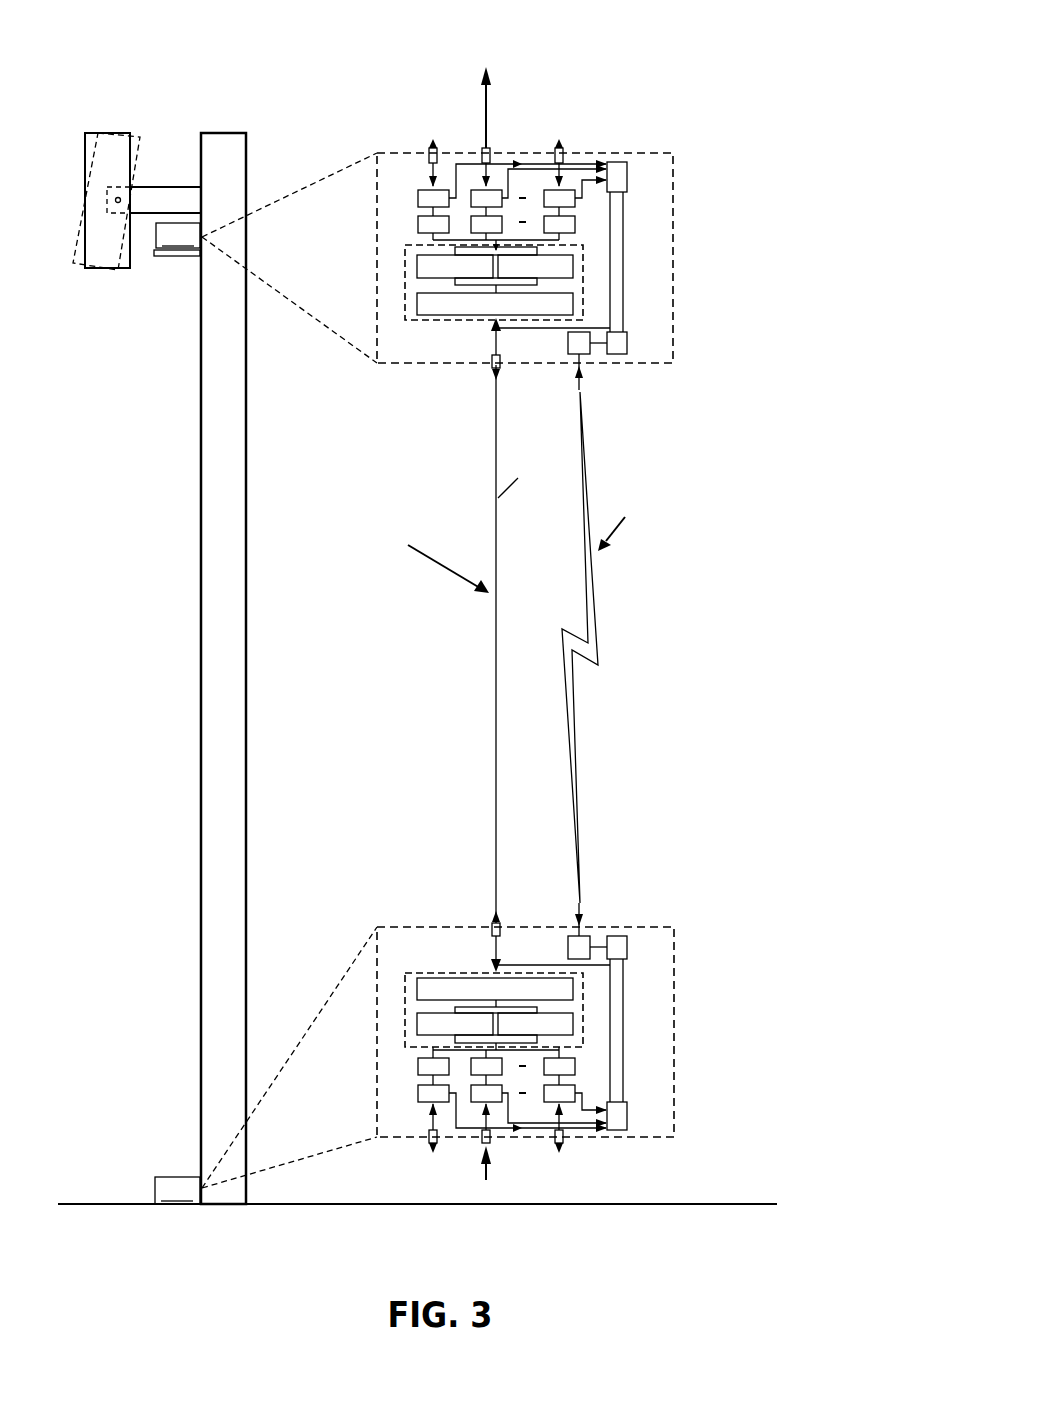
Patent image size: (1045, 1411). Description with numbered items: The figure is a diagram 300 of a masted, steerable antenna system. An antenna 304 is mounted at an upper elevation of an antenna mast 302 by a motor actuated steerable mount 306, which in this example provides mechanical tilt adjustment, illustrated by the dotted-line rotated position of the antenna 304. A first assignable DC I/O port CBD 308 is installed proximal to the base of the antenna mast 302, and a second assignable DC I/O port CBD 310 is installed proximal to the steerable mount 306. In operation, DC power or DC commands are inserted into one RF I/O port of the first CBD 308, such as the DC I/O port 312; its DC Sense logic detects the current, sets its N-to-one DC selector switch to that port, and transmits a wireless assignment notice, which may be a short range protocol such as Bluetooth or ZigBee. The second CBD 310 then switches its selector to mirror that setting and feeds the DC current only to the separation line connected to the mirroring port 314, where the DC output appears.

The diagram of masted, steerable antenna system 300 is at (729, 47).
The antenna mast 302 is at (247, 462).
The antenna 304 is at (127, 135).
The motor actuated steerable mount 306 is at (135, 187).
The first assignable DC I/O port CBD 308 is at (439, 1049).
The second assignable DC I/O port CBD 310 is at (443, 241).
The DC I/O port 312 is at (491, 1140).
The mirroring DC I/O port 314 is at (490, 149).